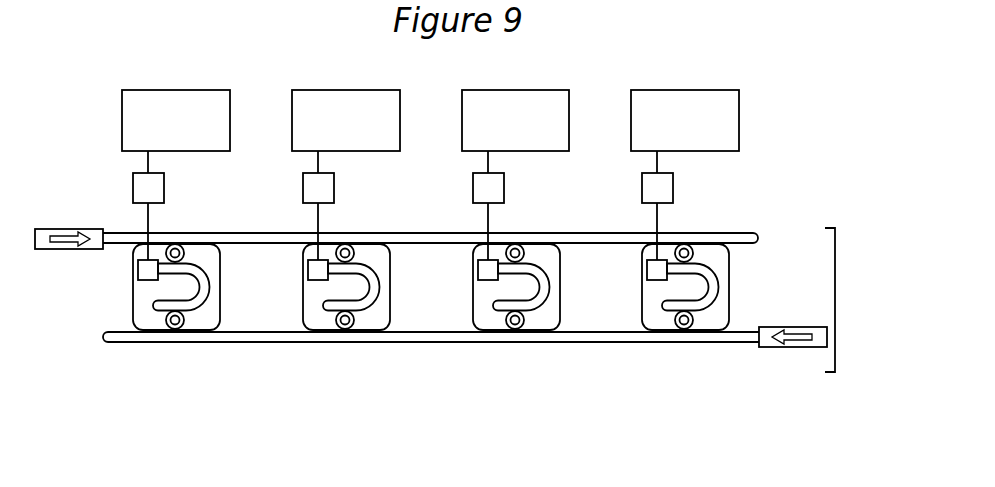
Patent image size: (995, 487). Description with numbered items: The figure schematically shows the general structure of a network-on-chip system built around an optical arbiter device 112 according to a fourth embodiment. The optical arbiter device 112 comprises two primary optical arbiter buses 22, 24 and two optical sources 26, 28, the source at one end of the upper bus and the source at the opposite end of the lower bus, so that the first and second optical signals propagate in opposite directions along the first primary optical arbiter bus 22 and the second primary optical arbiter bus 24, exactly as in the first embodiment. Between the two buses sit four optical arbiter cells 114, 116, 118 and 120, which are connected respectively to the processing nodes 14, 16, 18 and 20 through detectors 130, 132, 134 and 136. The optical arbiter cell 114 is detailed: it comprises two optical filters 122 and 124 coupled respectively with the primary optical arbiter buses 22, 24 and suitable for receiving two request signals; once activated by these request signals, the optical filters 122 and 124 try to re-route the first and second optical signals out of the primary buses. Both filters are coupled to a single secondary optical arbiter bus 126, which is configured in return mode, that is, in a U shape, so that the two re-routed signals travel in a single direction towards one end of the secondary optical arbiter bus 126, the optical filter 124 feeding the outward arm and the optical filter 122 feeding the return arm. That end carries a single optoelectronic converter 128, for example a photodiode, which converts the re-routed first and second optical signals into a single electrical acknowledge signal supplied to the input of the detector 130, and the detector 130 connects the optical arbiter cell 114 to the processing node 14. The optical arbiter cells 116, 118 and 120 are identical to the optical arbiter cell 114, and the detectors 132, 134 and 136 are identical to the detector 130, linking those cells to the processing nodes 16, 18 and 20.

The processing node 14 is at (176, 131).
The processing node 16 is at (346, 131).
The processing node 18 is at (515, 131).
The processing node 20 is at (685, 131).
The first primary optical arbiter bus 22 is at (743, 232).
The second primary optical arbiter bus 24 is at (113, 343).
The optical source 26 is at (60, 250).
The optical source 28 is at (812, 348).
The optical arbiter device 112 is at (835, 298).
The optical arbiter cell 114 is at (173, 297).
The optical arbiter cell 116 is at (392, 313).
The optical arbiter cell 118 is at (562, 313).
The optical arbiter cell 120 is at (730, 297).
The optical filter 122 is at (148, 250).
The optical filter 124 is at (187, 321).
The secondary optical arbiter bus 126 is at (210, 292).
The optoelectronic converter 128 is at (136, 272).
The detector 130 is at (164, 190).
The detector 132 is at (334, 190).
The detector 134 is at (504, 190).
The detector 136 is at (673, 190).